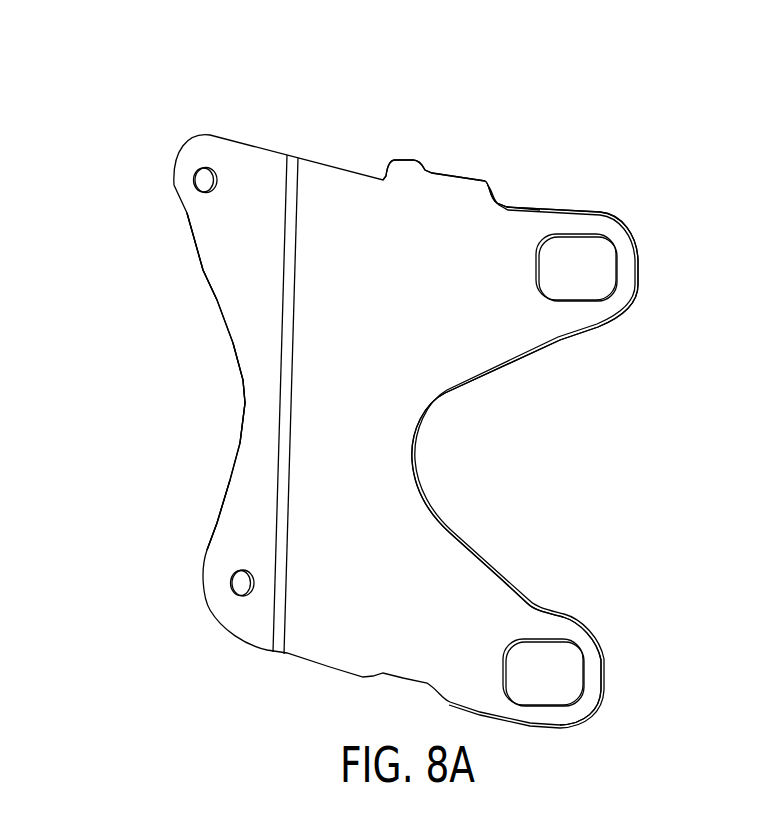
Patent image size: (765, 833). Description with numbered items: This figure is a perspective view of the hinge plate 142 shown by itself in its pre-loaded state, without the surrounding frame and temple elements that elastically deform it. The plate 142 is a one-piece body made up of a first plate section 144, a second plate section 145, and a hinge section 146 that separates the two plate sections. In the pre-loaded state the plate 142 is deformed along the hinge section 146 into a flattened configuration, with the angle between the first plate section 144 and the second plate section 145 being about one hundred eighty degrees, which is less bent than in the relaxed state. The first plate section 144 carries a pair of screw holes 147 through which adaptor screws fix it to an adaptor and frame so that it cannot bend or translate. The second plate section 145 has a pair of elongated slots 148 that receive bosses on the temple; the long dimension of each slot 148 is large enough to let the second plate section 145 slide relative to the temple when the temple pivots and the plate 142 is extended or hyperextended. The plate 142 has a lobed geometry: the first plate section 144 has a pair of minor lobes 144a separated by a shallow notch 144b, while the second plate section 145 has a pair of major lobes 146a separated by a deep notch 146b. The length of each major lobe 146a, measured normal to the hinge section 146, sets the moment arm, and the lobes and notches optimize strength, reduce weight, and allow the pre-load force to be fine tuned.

The plate 142 is at (115, 96).
The first plate section 144 is at (228, 300).
The minor lobes 144a is at (210, 238).
The shallow notch 144b is at (243, 403).
The second plate section 145 is at (452, 236).
The hinge section 146 is at (290, 217).
The major lobes 146a is at (505, 257).
The deep notch 146b is at (420, 460).
The screw holes 147 is at (190, 181).
The elongated slots 148 is at (617, 268).